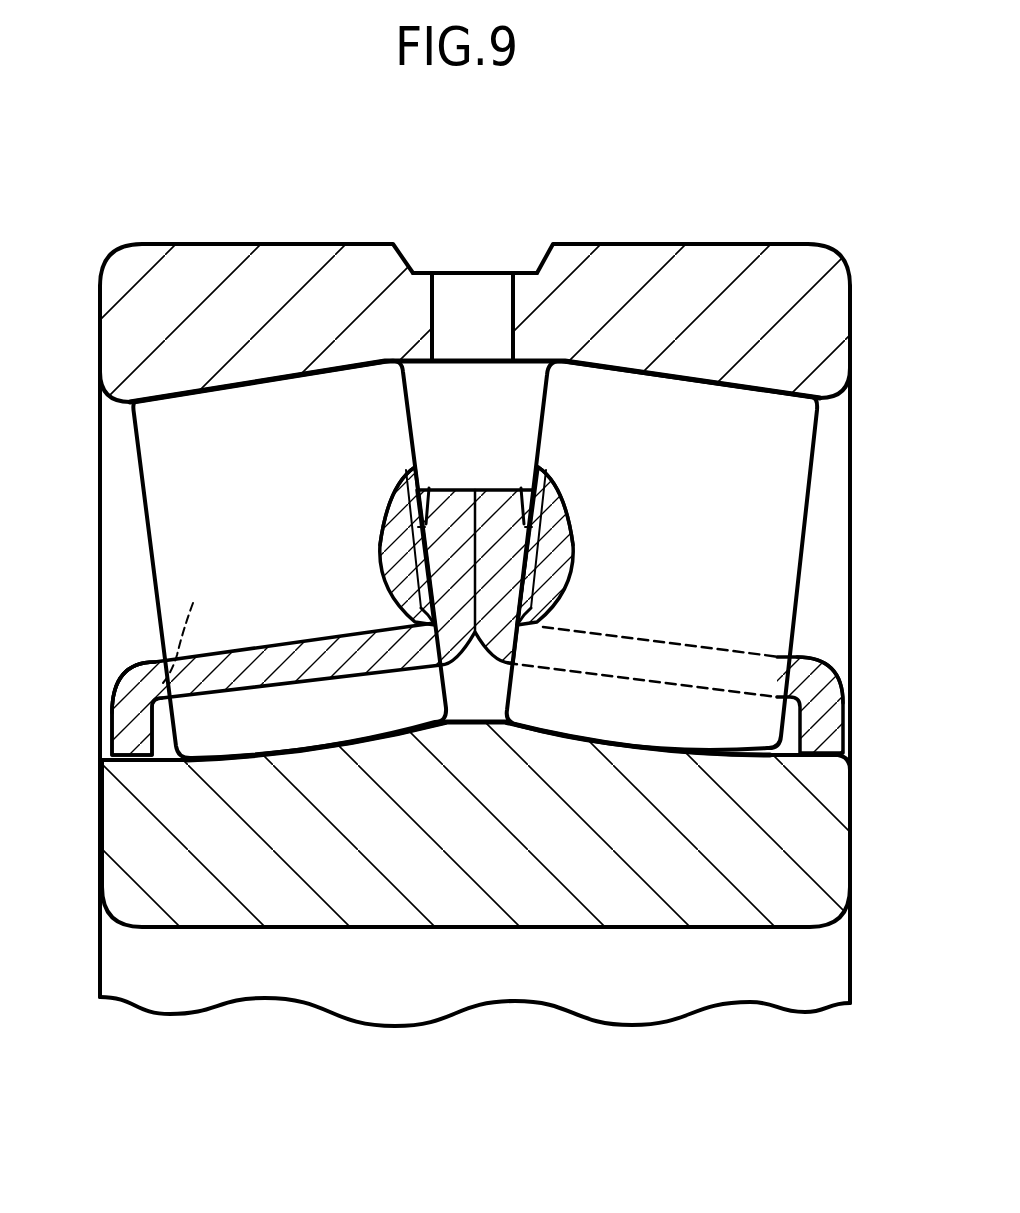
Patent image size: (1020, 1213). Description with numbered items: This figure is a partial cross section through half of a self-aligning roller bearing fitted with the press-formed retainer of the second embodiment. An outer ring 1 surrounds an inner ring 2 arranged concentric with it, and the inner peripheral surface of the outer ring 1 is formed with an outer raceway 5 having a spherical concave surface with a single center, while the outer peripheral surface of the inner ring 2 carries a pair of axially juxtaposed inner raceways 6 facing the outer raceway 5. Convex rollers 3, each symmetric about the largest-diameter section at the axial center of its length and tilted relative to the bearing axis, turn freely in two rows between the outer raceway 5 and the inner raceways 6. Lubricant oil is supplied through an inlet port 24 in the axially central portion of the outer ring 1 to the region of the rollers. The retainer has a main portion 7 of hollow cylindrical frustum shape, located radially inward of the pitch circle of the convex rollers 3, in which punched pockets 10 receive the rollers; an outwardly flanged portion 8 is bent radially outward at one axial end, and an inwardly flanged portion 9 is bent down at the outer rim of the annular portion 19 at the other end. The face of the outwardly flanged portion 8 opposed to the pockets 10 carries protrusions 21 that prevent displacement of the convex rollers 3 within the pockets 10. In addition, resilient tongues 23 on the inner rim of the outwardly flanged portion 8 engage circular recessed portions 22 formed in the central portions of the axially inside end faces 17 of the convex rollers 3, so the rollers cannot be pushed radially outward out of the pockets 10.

The outer ring 1 is at (622, 253).
The inner ring 2 is at (633, 913).
The convex roller 3 is at (160, 490).
The outer raceway 5 is at (281, 372).
The inner raceway 6 is at (255, 760).
The main portion 7 is at (287, 654).
The outwardly flanged portion 8 is at (438, 512).
The inwardly flanged portion 9 is at (125, 729).
The pocket 10 is at (873, 673).
The axially inside end face 17 is at (401, 390).
The annular portion 19 is at (150, 661).
The protrusion 21 is at (410, 478).
The circular recessed portion 22 is at (418, 548).
The resilient tongue 23 is at (430, 600).
The inlet port 24 is at (433, 303).